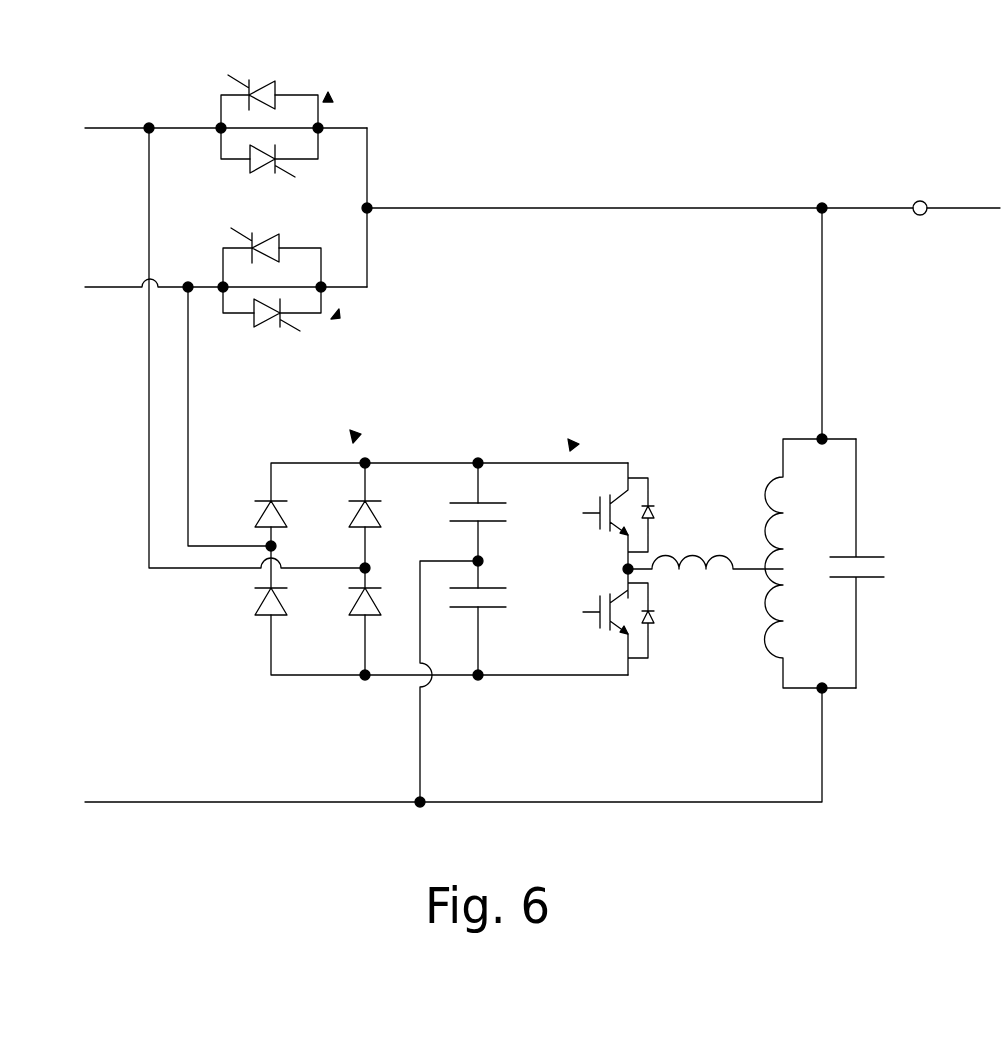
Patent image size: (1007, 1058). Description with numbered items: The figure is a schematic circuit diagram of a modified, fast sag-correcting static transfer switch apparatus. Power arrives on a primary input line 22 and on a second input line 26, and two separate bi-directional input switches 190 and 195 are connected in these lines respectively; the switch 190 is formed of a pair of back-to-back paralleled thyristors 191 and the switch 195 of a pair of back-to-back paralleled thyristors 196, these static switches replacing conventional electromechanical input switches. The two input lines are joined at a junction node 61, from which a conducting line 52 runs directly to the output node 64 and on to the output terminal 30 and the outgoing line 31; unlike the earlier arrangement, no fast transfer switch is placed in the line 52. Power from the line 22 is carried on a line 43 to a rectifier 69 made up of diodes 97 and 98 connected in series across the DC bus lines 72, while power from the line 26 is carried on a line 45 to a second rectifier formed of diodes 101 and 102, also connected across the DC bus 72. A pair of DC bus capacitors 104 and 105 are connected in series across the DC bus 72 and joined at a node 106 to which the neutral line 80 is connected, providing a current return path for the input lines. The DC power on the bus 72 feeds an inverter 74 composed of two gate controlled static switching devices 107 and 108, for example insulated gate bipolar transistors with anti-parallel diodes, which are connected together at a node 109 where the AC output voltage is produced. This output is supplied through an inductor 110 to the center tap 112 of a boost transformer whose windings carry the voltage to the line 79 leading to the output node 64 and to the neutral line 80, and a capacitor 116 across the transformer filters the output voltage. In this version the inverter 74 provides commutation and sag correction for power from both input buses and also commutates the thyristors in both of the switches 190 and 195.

The primary input line 22 is at (113, 126).
The input line 26 is at (107, 286).
The output terminal 30 is at (921, 200).
The output line 31 is at (967, 208).
The line 43 is at (149, 438).
The line 45 is at (190, 432).
The conducting line 52 is at (538, 207).
The junction node 61 is at (372, 203).
The output node 64 is at (822, 204).
The rectifier 69 is at (370, 411).
The DC bus 72 is at (442, 462).
The inverter 74 is at (593, 412).
The line 79 is at (823, 353).
The neutral line 80 is at (188, 801).
The diode 97 is at (382, 522).
The diode 98 is at (350, 605).
The diode 101 is at (260, 522).
The diode 102 is at (267, 617).
The DC bus capacitor 104 is at (500, 503).
The DC bus capacitor 105 is at (498, 608).
The node 106 is at (483, 559).
The gate controlled static switching device 107 is at (636, 475).
The gate controlled static switching device 108 is at (650, 645).
The node 109 is at (624, 570).
The inductor 110 is at (694, 553).
The center tap 112 is at (768, 491).
The capacitor 116 is at (873, 558).
The bi-directional input switch 190 is at (318, 121).
The thyristor 191 is at (275, 85).
The bi-directional input switch 195 is at (317, 292).
The thyristor 196 is at (280, 233).